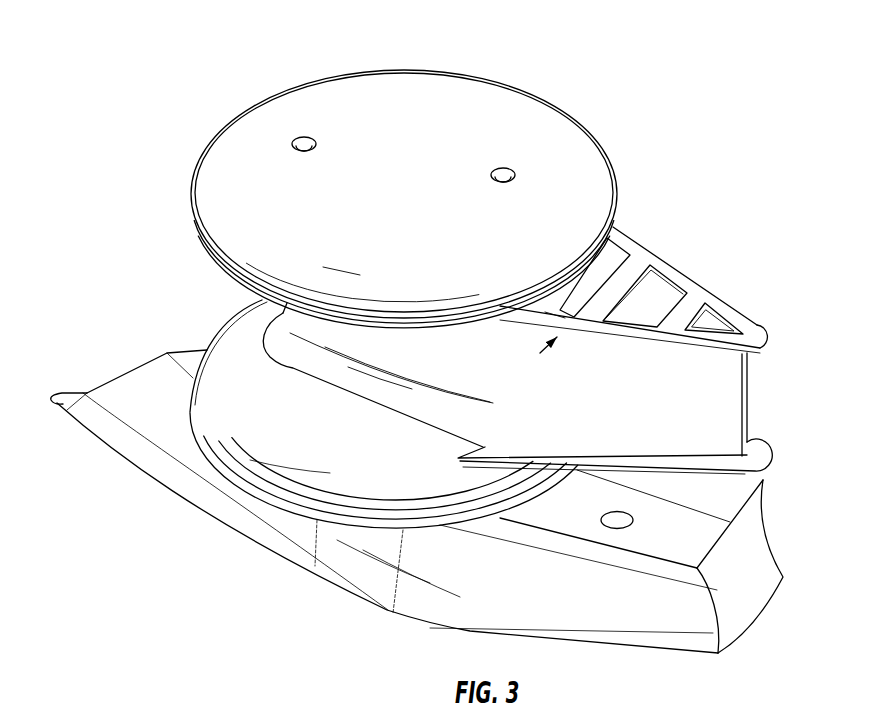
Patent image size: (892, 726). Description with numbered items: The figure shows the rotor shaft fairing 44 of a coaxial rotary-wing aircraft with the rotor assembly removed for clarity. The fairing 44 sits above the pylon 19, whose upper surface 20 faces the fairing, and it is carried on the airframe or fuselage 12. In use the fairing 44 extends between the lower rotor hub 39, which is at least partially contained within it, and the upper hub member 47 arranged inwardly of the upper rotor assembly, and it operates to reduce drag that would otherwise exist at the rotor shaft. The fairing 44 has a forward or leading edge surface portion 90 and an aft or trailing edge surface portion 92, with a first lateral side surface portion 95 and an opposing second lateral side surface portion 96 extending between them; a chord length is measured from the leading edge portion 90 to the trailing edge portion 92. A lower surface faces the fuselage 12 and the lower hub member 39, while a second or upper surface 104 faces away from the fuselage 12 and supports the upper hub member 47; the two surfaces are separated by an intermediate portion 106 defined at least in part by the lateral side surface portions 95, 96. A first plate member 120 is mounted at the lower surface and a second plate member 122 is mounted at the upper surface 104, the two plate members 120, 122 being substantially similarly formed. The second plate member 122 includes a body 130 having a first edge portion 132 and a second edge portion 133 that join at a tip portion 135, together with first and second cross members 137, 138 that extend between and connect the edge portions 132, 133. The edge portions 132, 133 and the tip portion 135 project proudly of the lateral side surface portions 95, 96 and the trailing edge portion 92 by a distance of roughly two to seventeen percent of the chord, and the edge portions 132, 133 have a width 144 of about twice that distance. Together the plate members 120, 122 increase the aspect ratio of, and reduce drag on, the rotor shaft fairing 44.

The fuselage 12 is at (120, 433).
The pylon 19 is at (325, 557).
The upper surface 20 is at (187, 363).
The lower rotor hub 39 is at (427, 495).
The rotor shaft fairing 44 is at (220, 308).
The upper hub member 47 is at (578, 162).
The leading edge surface portion 90 is at (253, 322).
The trailing edge surface portion 92 is at (744, 402).
The first lateral side surface portion 95 is at (490, 390).
The second lateral side surface portion 96 is at (762, 360).
The second or upper surface 104 is at (688, 282).
The intermediate portion 106 is at (340, 360).
The first plate member 120 is at (770, 470).
The second plate member 122 is at (723, 289).
The body 130 is at (634, 242).
The first edge portion 132 is at (658, 290).
The second edge portion 133 is at (629, 336).
The tip portion 135 is at (747, 337).
The first cross member 137 is at (572, 314).
The second cross member 138 is at (693, 313).
The width 144 is at (565, 325).